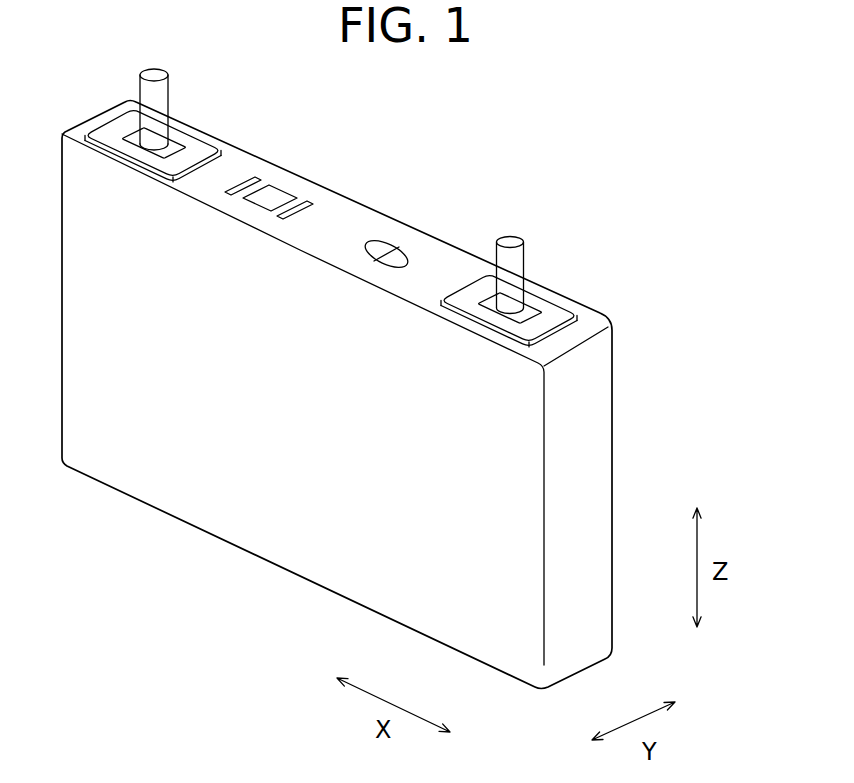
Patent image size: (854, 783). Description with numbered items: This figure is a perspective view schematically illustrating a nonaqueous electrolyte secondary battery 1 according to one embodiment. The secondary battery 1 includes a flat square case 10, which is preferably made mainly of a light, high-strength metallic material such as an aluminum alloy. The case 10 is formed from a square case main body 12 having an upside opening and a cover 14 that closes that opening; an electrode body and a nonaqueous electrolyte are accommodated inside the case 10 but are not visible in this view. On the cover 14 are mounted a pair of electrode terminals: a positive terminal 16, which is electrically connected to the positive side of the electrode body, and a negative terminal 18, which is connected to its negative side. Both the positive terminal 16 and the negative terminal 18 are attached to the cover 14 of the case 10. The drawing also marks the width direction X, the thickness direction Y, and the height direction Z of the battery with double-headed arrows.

The nonaqueous electrolyte secondary battery 1 is at (580, 83).
The case 10 is at (353, 543).
The case main body 12 is at (240, 500).
The cover 14 is at (335, 210).
The positive terminal 16 is at (160, 99).
The negative terminal 18 is at (517, 266).